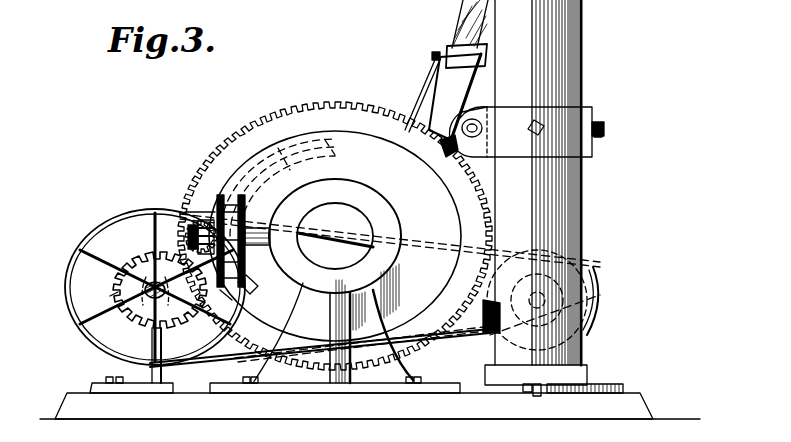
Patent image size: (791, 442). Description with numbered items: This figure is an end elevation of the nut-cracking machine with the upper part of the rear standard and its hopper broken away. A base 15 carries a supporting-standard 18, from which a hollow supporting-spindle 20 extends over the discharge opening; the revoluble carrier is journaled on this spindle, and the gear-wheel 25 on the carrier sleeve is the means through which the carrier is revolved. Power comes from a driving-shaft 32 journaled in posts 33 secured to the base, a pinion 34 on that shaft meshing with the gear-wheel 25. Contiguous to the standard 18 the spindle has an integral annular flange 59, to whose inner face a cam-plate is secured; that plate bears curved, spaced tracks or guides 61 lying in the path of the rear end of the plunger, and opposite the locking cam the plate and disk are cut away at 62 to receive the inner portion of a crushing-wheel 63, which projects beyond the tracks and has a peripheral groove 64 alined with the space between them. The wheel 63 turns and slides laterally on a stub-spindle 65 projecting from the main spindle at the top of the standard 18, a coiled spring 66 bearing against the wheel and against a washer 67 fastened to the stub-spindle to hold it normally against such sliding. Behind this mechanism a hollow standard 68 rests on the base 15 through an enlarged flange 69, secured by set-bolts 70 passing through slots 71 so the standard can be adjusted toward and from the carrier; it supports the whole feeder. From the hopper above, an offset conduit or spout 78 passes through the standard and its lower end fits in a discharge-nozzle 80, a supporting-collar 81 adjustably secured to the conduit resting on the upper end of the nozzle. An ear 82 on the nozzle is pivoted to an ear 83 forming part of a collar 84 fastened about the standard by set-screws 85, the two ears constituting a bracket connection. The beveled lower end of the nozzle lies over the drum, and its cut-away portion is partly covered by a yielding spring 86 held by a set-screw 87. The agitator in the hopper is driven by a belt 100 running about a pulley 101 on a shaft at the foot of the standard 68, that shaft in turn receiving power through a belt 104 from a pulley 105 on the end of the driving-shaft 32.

The base 15 is at (354, 406).
The supporting-standard 18 is at (335, 328).
The supporting-spindle 20 is at (335, 236).
The gear-wheel 25 is at (306, 108).
The driving-shaft 32 is at (154, 282).
The posts 33 is at (166, 332).
The pinion 34 is at (101, 287).
The annular flange 59 is at (335, 236).
The tracks or guides 61 is at (292, 165).
The cut-away portion 62 is at (245, 200).
The crushing-wheel 63 is at (252, 282).
The peripheral groove 64 is at (246, 222).
The stub-spindle 65 is at (188, 232).
The spring 66 is at (210, 254).
The washer 67 is at (183, 210).
The hollow standard 68 is at (584, 203).
The flange 69 is at (607, 382).
The set-bolts 70 is at (538, 397).
The slots 71 is at (526, 393).
The conduit or spout 78 is at (470, 24).
The discharge-nozzle 80 is at (455, 105).
The supporting-collar 81 is at (466, 65).
The ear 82 is at (476, 108).
The ear 83 is at (481, 125).
The collar 84 is at (592, 155).
The set-screws 85 is at (604, 127).
The spring 86 is at (425, 92).
The set-screw 87 is at (432, 57).
The belt 100 is at (598, 276).
The pulley 101 is at (375, 290).
The belt 104 is at (118, 215).
The pulley 105 is at (130, 240).